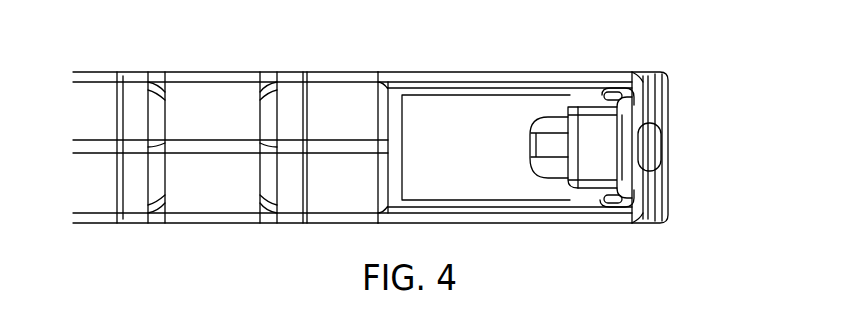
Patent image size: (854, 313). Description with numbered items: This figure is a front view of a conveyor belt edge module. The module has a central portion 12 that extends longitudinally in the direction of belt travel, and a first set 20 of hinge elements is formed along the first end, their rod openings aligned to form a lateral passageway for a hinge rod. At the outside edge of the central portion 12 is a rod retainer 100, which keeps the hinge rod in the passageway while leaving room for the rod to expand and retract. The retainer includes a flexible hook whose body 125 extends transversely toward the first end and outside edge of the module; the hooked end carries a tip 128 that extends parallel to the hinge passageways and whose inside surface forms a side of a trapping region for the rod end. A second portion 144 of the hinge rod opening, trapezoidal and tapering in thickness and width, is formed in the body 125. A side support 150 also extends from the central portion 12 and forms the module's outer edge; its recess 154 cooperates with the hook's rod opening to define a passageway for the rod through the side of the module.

The central portion 12 is at (190, 41).
The first set of hinge elements 20 is at (213, 113).
The rod retainer 100 is at (541, 60).
The body 125 is at (466, 157).
The second portion of the hinge rod opening 144 is at (540, 124).
The tip 128 is at (605, 162).
The side support 150 is at (657, 70).
The recess 154 is at (650, 142).